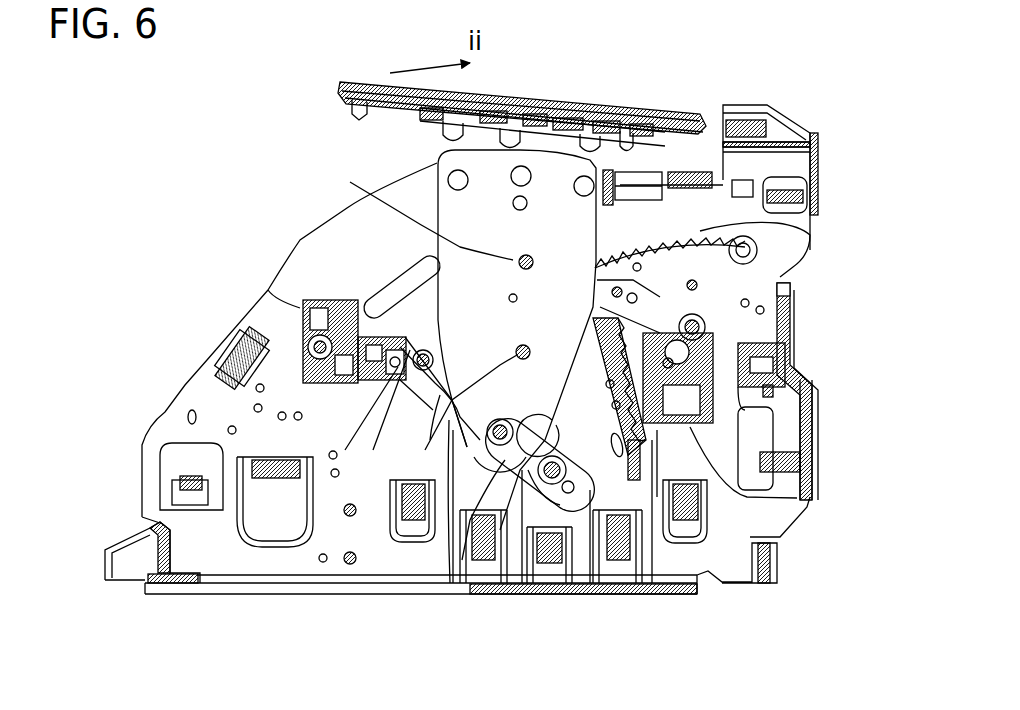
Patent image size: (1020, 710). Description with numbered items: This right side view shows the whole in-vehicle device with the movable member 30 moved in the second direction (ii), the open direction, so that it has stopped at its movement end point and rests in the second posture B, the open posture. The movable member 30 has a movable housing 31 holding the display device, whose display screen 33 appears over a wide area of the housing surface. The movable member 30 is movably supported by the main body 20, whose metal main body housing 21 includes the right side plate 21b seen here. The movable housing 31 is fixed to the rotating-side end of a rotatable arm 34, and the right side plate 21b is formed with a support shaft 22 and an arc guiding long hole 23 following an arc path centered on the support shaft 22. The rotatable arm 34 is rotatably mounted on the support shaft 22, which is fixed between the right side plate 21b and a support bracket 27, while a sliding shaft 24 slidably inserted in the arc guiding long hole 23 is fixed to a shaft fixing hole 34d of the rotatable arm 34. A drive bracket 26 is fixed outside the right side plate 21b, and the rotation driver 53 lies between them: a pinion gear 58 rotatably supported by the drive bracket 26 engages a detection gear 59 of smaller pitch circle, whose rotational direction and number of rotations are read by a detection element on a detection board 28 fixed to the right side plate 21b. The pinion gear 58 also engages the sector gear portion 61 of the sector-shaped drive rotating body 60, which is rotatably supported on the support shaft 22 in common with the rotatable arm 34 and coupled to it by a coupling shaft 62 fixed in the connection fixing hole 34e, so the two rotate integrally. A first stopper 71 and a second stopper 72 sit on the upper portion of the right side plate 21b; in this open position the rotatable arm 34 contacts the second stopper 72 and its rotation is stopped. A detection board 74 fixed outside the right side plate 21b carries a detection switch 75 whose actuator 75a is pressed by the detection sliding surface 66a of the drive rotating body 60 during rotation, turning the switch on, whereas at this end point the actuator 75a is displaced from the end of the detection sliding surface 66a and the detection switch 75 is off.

The main body 20 is at (737, 620).
The main body housing 21 is at (165, 588).
The right side plate 21b is at (150, 471).
The support shaft 22 is at (495, 433).
The arc guiding long hole 23 is at (427, 335).
The sliding shaft 24 is at (440, 263).
The drive bracket 26 is at (794, 299).
The support bracket 27 is at (540, 490).
The detection board 28 is at (775, 500).
The movable member 30 is at (336, 70).
The movable housing 31 is at (345, 91).
The display screen 33 is at (517, 93).
The second posture B is at (562, 86).
The rotatable arm 34 is at (453, 203).
The shaft fixing hole 34d is at (527, 256).
The connection fixing hole 34e is at (525, 347).
The rotation driver 53 is at (724, 282).
The pinion gear 58 is at (812, 224).
The detection gear 59 is at (790, 350).
The drive rotating body 60 is at (600, 478).
The sector gear portion 61 is at (668, 478).
The coupling shaft 62 is at (437, 400).
The detection sliding surface 66a is at (427, 335).
The first stopper 71 is at (250, 319).
The second stopper 72 is at (628, 122).
The detection board 74 is at (273, 314).
The detection switch 75 is at (385, 378).
The actuator 75a is at (402, 372).